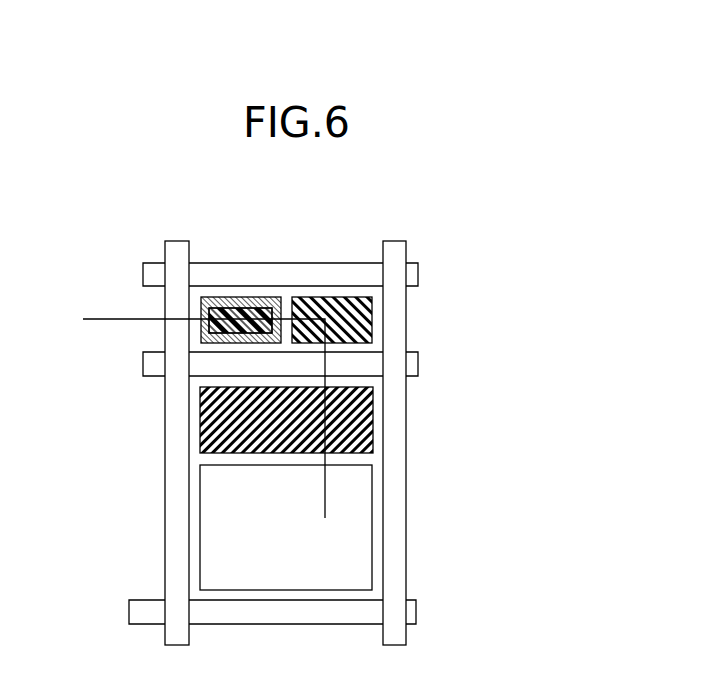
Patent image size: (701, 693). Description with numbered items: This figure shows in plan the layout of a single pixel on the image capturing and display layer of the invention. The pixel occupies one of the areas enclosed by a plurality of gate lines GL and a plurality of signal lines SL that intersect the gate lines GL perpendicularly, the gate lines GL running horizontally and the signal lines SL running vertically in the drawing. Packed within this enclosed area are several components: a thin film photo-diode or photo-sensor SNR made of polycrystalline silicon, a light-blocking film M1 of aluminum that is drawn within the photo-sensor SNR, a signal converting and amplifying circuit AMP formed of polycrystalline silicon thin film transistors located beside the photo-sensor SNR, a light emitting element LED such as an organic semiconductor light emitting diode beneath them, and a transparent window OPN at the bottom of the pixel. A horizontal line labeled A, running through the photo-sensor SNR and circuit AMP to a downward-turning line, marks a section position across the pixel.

The signal line SL is at (405, 513).
The gate line GL is at (325, 265).
The thin film photo-diode (photo-sensor) SNR is at (242, 297).
The light-blocking film M1 is at (208, 333).
The signal converting and amplifying circuit AMP is at (373, 322).
The light emitting element LED is at (373, 434).
The transparent window OPN is at (372, 572).
The section line A-A' A is at (198, 423).